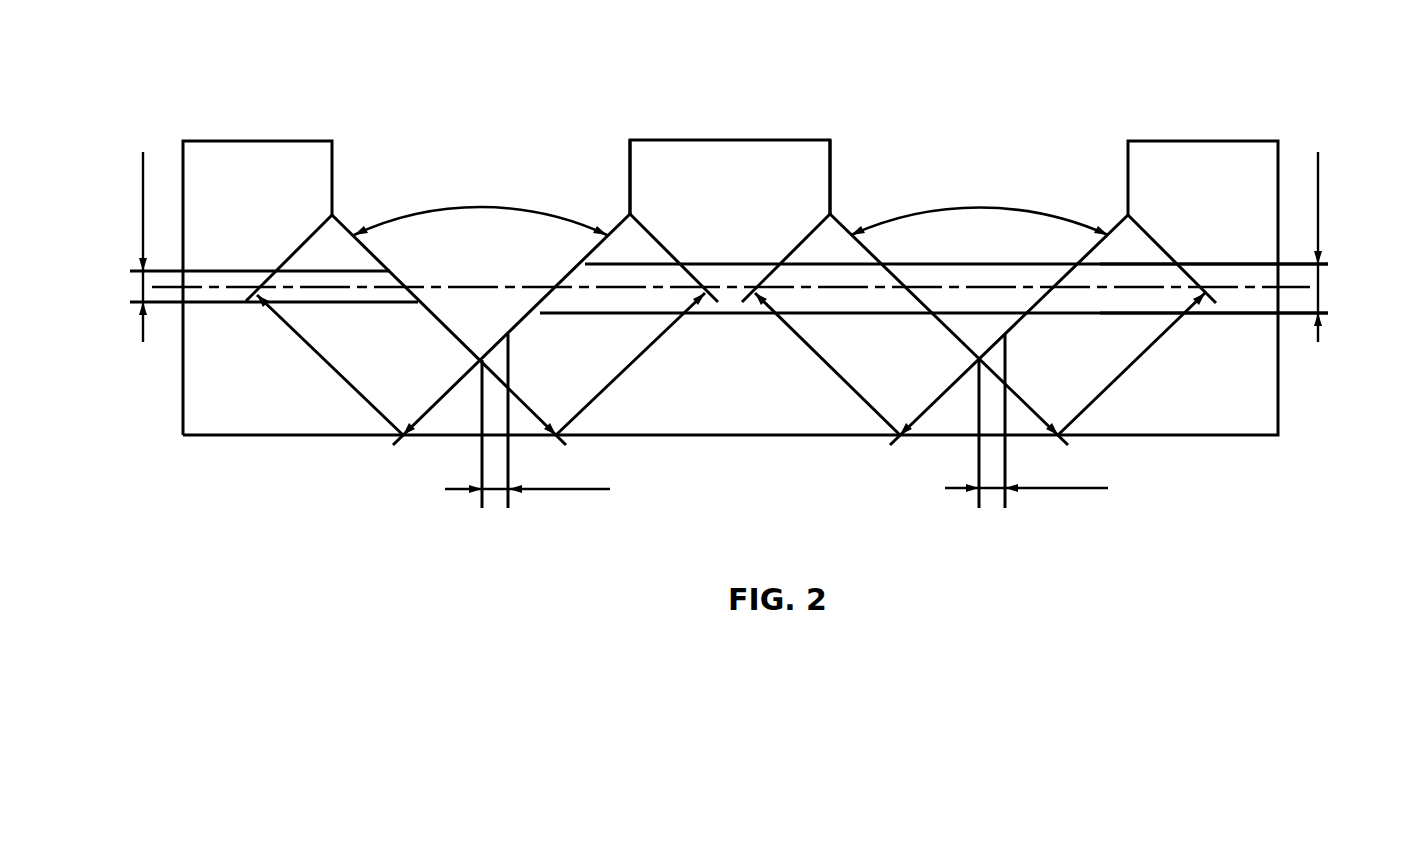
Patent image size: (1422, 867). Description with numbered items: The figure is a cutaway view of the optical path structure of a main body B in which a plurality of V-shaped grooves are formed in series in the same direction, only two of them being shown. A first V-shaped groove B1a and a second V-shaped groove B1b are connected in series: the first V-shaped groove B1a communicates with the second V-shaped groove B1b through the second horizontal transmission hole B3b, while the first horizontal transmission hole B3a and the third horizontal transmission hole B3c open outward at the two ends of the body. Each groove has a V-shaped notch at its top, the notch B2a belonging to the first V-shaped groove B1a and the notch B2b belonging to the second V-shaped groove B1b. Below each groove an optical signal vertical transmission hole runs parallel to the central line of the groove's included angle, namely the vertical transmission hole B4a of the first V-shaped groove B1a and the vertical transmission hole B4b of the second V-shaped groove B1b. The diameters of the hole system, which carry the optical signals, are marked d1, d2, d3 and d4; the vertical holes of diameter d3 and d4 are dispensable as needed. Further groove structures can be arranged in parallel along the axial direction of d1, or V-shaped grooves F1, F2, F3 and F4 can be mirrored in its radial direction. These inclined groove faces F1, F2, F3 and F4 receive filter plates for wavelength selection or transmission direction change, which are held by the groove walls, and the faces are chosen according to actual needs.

The main body B is at (725, 410).
The first V-shaped groove B1a is at (412, 288).
The second V-shaped groove B1b is at (955, 335).
The V-shaped notch of the first V-shaped groove B2a is at (630, 150).
The V-shaped notch of the second V-shaped groove B2b is at (832, 158).
The first horizontal transmission hole B3a is at (213, 275).
The second horizontal transmission hole B3b is at (742, 275).
The third horizontal transmission hole B3c is at (1208, 278).
The optical signal vertical transmission hole of the first V-shaped groove B4a is at (495, 412).
The optical signal vertical transmission hole of the second V-shaped groove B4b is at (992, 413).
The V-shaped groove F1 is at (330, 365).
The V-shaped groove F2 is at (630, 364).
The V-shaped groove F3 is at (827, 364).
The V-shaped groove F4 is at (1131, 364).
The hole system diameter d1 is at (103, 247).
The hole system diameter d2 is at (1361, 247).
The hole system diameter d3 is at (527, 512).
The hole system diameter d4 is at (1026, 510).